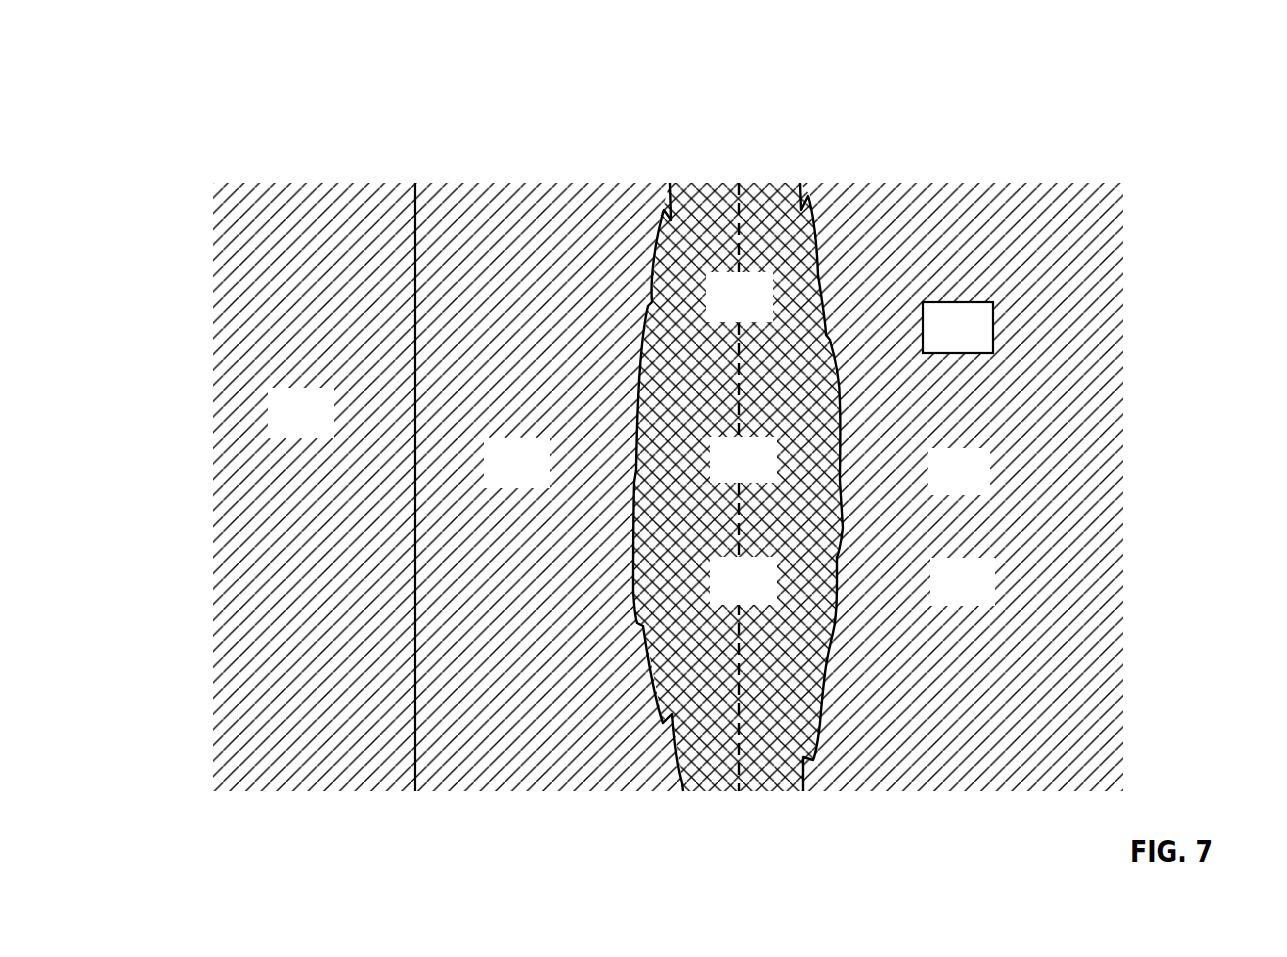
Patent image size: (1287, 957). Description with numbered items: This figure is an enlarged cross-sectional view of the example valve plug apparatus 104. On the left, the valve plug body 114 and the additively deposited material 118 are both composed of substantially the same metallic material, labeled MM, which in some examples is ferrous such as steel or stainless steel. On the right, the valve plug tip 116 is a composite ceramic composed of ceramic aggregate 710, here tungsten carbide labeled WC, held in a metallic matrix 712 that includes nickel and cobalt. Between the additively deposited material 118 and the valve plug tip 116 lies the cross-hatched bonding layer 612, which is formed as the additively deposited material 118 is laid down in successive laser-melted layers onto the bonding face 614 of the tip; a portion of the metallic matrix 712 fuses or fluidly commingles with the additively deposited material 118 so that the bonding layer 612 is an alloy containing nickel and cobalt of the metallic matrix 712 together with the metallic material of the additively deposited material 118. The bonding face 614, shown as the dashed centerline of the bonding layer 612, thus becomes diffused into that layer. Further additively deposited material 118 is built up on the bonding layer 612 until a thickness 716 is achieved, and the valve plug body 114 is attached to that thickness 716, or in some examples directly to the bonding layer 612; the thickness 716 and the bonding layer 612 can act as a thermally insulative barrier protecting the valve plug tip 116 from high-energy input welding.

The valve plug apparatus 104 is at (173, 132).
The valve plug body 114 is at (310, 693).
The valve plug tip 116 is at (1052, 533).
The additively deposited material 118 is at (533, 698).
The bonding layer 612 is at (780, 523).
The bonding face 614 is at (739, 380).
The ceramic aggregate 710 is at (993, 312).
The metallic matrix 712 is at (985, 405).
The thickness 716 is at (670, 163).